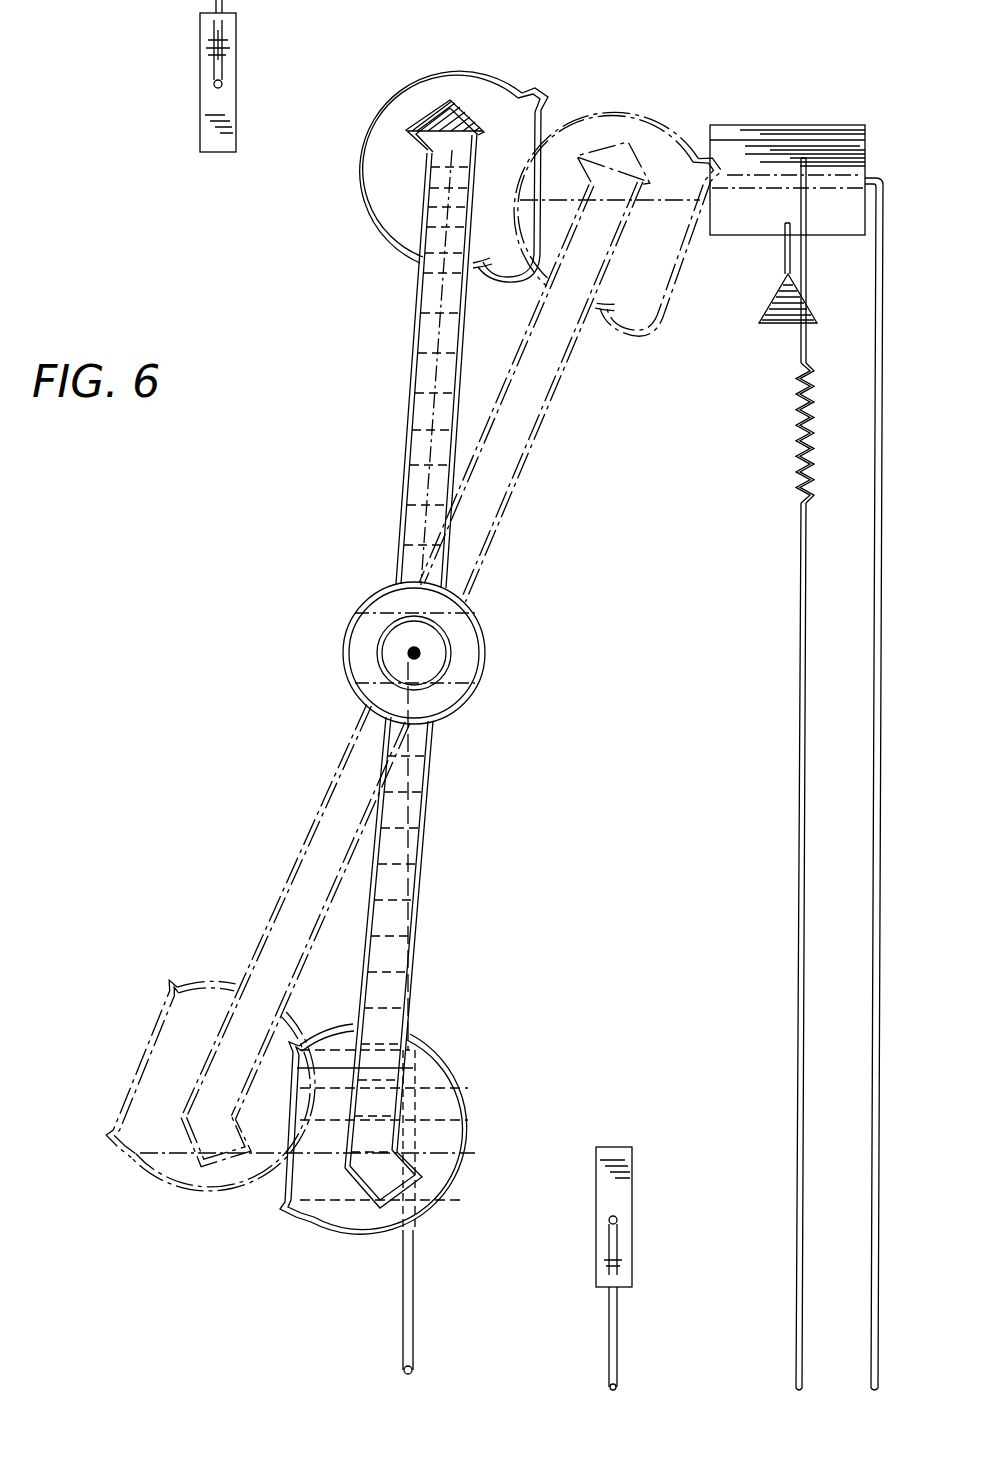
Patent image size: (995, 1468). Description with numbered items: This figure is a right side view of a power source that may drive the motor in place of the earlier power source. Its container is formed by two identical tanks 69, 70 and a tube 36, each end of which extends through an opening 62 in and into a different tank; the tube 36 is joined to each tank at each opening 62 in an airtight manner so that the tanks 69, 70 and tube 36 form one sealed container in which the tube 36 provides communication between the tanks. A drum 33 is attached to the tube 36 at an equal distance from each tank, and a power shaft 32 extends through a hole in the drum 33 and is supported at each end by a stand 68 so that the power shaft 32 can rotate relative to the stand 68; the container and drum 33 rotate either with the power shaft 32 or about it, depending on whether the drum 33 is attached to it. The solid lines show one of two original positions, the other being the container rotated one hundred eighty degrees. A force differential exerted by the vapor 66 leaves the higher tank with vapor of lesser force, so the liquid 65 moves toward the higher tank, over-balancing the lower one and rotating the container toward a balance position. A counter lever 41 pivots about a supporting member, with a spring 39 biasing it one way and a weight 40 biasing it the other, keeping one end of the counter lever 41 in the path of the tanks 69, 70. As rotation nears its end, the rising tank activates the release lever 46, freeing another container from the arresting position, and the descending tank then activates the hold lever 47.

The power shaft 32 is at (425, 655).
The drum 33 is at (440, 648).
The tube 36 is at (405, 440).
The spring 39 is at (797, 432).
The weight 40 is at (760, 325).
The counter lever 41 is at (790, 125).
The release lever 46 is at (240, 88).
The hold lever 47 is at (636, 1178).
The opening 62 is at (415, 265).
The liquid 65 is at (440, 325).
The vapor 66 is at (420, 95).
The stand 68 is at (418, 1288).
The tank 69 is at (522, 80).
The tank 70 is at (315, 1232).